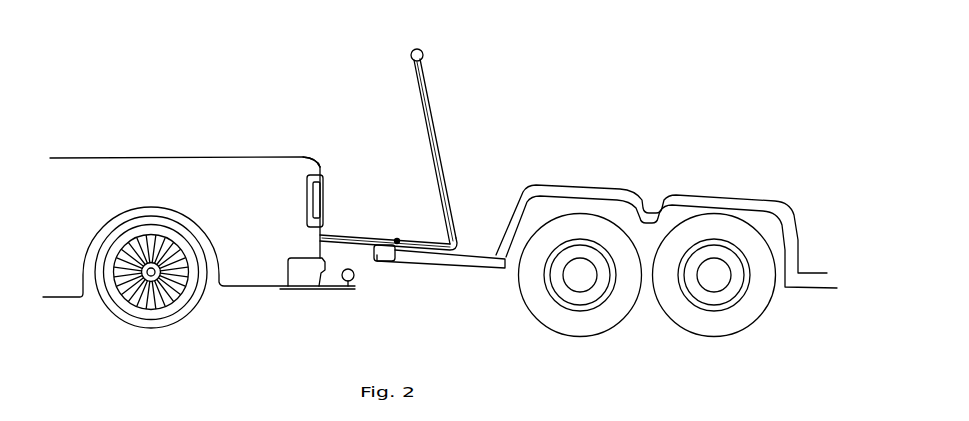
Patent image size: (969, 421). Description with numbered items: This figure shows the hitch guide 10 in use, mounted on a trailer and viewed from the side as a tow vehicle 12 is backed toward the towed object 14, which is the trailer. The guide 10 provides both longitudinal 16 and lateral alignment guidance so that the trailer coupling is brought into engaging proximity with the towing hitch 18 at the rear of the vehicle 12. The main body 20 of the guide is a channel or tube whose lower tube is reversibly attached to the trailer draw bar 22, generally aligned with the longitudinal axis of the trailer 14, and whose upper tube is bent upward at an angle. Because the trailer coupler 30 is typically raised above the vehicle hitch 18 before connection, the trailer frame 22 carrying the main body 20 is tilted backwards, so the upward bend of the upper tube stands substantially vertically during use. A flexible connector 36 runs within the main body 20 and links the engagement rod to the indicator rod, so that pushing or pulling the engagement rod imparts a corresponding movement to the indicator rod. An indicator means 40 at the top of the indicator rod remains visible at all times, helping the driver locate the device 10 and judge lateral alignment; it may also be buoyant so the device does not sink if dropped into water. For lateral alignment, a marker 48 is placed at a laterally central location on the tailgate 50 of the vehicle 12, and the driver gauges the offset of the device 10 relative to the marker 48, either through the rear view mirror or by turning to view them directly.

The hitch guide 10 is at (447, 86).
The tow vehicle 12 is at (258, 201).
The towed object 14 is at (616, 181).
The longitudinal alignment guidance 16 is at (593, 77).
The towing hitch 18 is at (334, 306).
The main body 20 is at (457, 218).
The trailer draw bar 22 is at (452, 264).
The trailer coupler 30 is at (380, 262).
The flexible connector 36 is at (340, 236).
The indicator means 40 is at (424, 50).
The marker 48 is at (304, 152).
The tailgate 50 is at (322, 165).